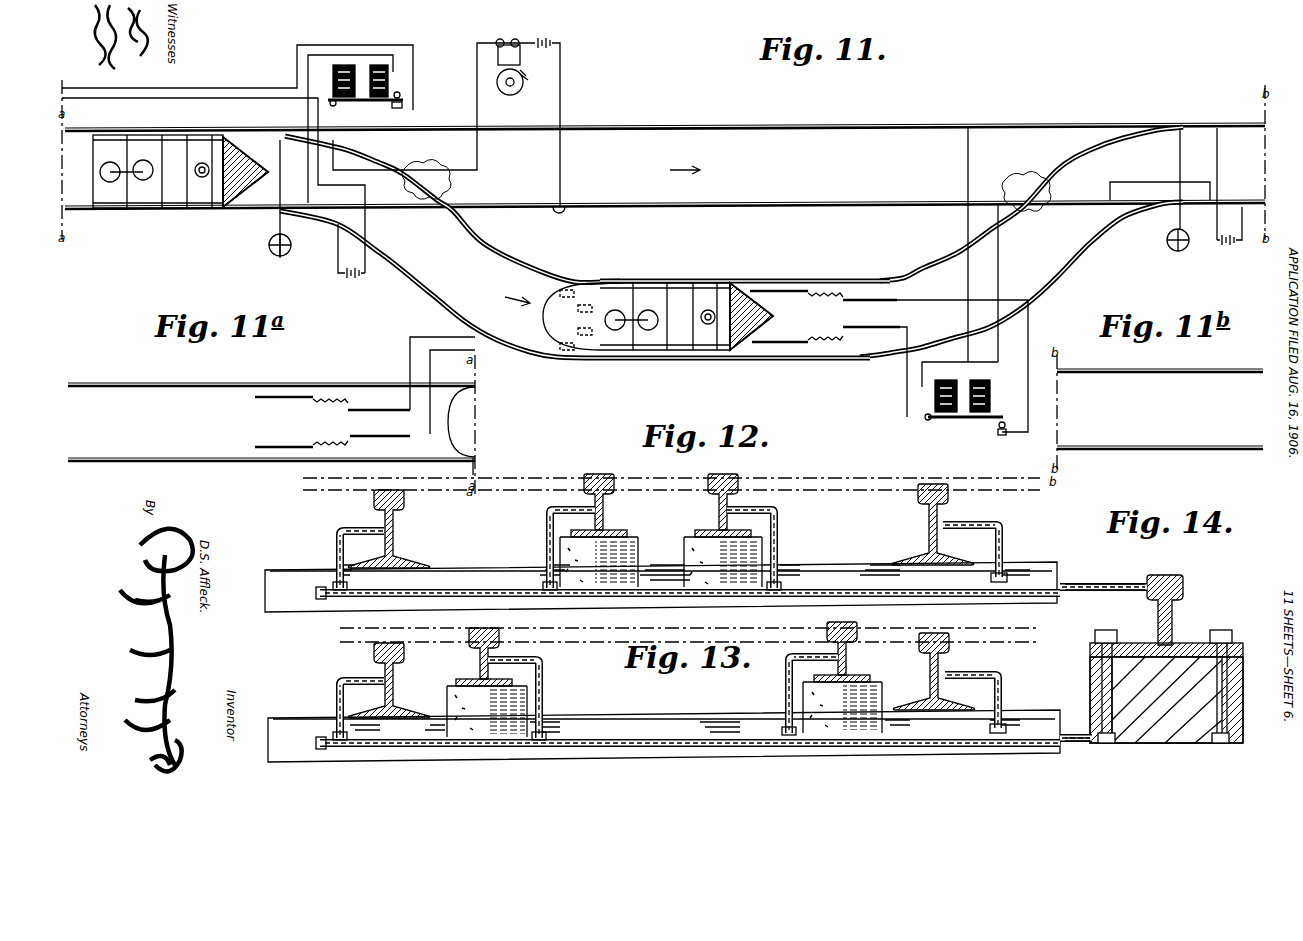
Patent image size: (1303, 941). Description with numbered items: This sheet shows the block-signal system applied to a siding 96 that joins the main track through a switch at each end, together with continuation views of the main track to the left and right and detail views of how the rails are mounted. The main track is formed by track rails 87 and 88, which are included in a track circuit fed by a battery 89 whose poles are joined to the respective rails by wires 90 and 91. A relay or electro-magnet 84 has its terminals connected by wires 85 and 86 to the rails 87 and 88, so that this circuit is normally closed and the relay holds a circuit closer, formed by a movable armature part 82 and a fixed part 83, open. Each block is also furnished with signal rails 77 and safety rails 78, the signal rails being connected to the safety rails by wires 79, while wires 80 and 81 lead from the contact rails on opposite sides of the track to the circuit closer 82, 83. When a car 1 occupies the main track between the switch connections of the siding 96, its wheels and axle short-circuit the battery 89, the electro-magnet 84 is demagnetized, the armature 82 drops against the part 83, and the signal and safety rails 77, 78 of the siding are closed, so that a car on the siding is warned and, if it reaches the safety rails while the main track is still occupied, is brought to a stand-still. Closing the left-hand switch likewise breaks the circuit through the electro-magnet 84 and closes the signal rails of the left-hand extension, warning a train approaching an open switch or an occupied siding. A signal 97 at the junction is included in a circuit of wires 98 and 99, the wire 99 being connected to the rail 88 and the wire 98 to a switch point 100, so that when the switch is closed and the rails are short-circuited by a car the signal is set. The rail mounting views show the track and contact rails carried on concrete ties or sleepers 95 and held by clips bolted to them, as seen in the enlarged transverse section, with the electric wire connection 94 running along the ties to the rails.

In FIG. 11, the car 1 is at (170, 196).
In FIG. 11A, the car 1 is at (473, 440).
In FIG. 11, the signal rails 77 is at (800, 293).
In FIG. 11A, the signal rails 77 is at (292, 400).
In FIG. 13, the signal rails 77 is at (472, 642).
In FIG. 11, the safety rails 78 is at (874, 302).
In FIG. 11A, the safety rails 78 is at (380, 411).
In FIG. 12, the safety rails 78 is at (598, 478).
In FIG. 11, the wires 79 is at (828, 300).
In FIG. 11A, the wires 79 is at (328, 409).
In FIG. 11, the wire 80 is at (232, 92).
In FIG. 11A, the wire 80 is at (432, 348).
In FIG. 14, the wire 80 is at (1140, 592).
In FIG. 11, the wire 81 is at (942, 302).
In FIG. 11A, the wire 81 is at (406, 369).
In FIG. 14, the wire 81 is at (1150, 582).
In FIG. 11, the circuit closer movable part 82 is at (362, 102).
In FIG. 11, the circuit closer fixed part 83 is at (406, 108).
In FIG. 11, the relay or electro-magnet 84 is at (378, 62).
In FIG. 11, the wire 85 is at (312, 62).
In FIG. 14, the wire 85 is at (1110, 592).
In FIG. 11, the wire 86 is at (345, 58).
In FIG. 14, the wire 86 is at (1135, 583).
In FIG. 11, the track rail 87 is at (205, 88).
In FIG. 11A, the track rail 87 is at (162, 388).
In FIG. 11B, the track rail 87 is at (1140, 374).
In FIG. 12, the track rail 87 is at (406, 508).
In FIG. 13, the track rail 87 is at (406, 660).
In FIG. 11, the track rail 88 is at (890, 204).
In FIG. 11A, the track rail 88 is at (198, 462).
In FIG. 11B, the track rail 88 is at (1145, 451).
In FIG. 12, the track rail 88 is at (950, 500).
In FIG. 13, the track rail 88 is at (952, 648).
In FIG. 14, the track rail 88 is at (1185, 600).
In FIG. 11, the battery 89 is at (357, 277).
In FIG. 11, the wire 90 is at (372, 235).
In FIG. 11, the wire 91 is at (1243, 184).
In FIG. 12, the conduit pipe 94 is at (840, 585).
In FIG. 13, the conduit pipe 94 is at (692, 748).
In FIG. 12, the concrete ties or sleepers 95 is at (800, 568).
In FIG. 13, the concrete ties or sleepers 95 is at (640, 714).
In FIG. 14, the concrete ties or sleepers 95 is at (1195, 743).
In FIG. 11, the siding 96 is at (852, 360).
In FIG. 11, the signal 97 is at (513, 48).
In FIG. 11, the wire 98 is at (478, 156).
In FIG. 11, the wire 99 is at (573, 162).
In FIG. 11, the switch point 100 is at (275, 208).